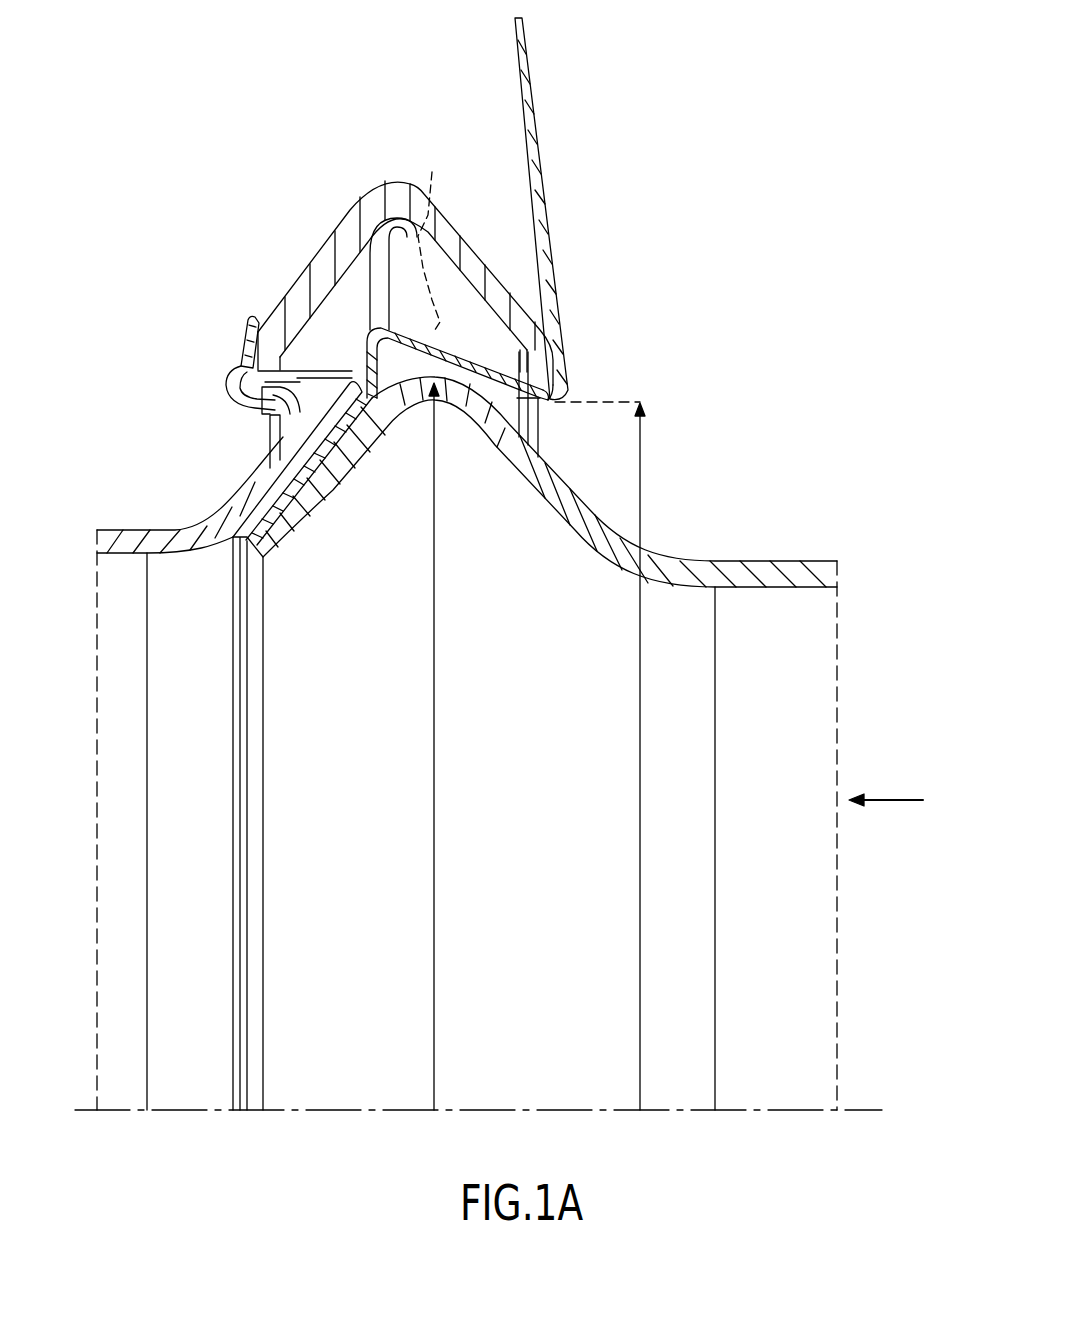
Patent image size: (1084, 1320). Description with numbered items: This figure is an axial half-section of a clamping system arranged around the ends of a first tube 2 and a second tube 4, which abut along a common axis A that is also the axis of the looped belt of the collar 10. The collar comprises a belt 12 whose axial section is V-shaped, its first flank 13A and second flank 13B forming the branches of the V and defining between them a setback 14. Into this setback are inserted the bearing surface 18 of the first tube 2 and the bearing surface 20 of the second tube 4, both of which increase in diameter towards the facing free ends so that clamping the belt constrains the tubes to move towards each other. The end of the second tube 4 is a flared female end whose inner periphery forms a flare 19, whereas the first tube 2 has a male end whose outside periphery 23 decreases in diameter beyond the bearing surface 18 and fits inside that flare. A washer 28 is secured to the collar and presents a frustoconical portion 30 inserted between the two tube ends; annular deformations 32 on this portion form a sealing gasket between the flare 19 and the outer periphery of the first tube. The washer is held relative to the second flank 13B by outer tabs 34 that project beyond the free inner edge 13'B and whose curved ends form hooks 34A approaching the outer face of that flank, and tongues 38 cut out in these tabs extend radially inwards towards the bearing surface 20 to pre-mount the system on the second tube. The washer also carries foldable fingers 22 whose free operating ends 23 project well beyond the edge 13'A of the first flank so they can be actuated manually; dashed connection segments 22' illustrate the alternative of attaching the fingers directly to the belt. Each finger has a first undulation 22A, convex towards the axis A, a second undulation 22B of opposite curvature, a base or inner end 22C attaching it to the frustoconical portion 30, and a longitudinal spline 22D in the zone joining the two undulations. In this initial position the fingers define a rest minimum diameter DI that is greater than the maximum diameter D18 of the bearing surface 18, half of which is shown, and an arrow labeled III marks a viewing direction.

The first tube 2 is at (550, 743).
The second tube 4 is at (122, 554).
The collar 10 is at (446, 260).
The belt 12 is at (405, 283).
The first flank 13A is at (470, 262).
The second flank 13B is at (313, 286).
The edge of the belt 13'A is at (577, 355).
The free inner edge of the flank 13'B is at (261, 351).
The setback 14 is at (397, 247).
The bearing surface of the first tube 18 is at (520, 420).
The flare 19 is at (328, 455).
The bearing surface of the second tube 20 is at (278, 437).
The foldable fingers 22 is at (502, 286).
The connection segments 22' is at (433, 240).
The first undulation 22A is at (552, 400).
The second undulation 22B is at (358, 248).
The inner end of the finger 22C is at (393, 400).
The longitudinal spline 22D is at (470, 400).
The free operating end 23 is at (534, 118).
The washer 28 is at (230, 540).
The frustoconical portion 30 is at (348, 438).
The annular deformations 32 is at (310, 470).
The outer tabs 34 is at (251, 343).
The hooks 34A is at (249, 318).
The tongues 38 is at (275, 409).
The maximum diameter of the bearing surface D18 is at (434, 822).
The rest minimum diameter DI is at (640, 822).
The view direction III is at (886, 789).
The axis A is at (866, 1112).